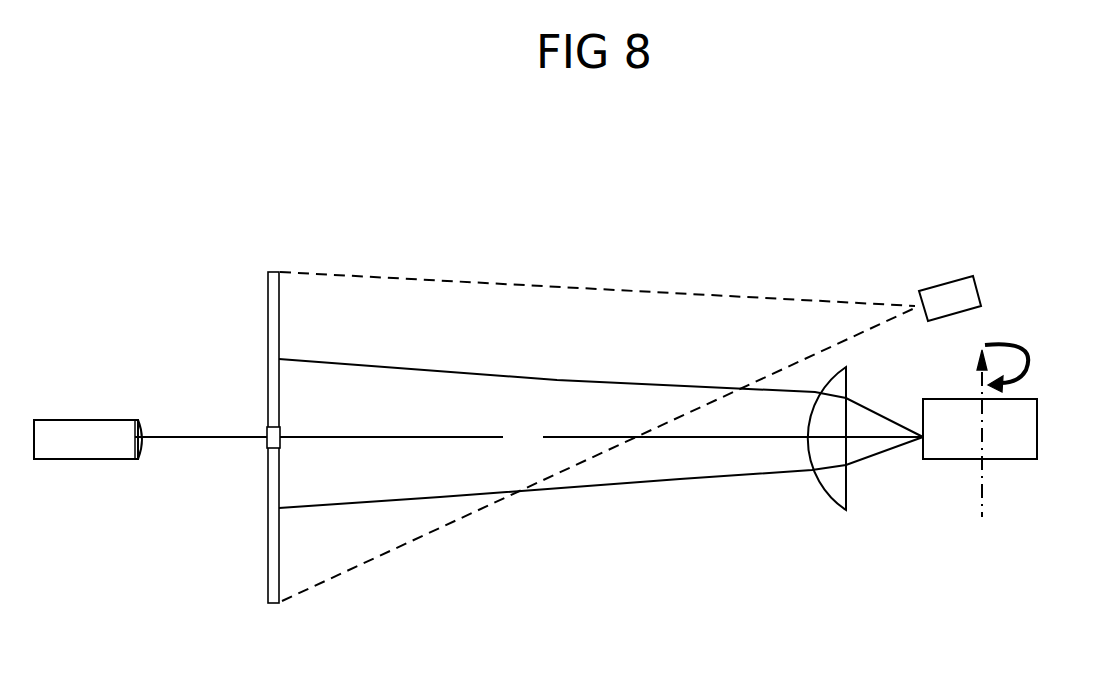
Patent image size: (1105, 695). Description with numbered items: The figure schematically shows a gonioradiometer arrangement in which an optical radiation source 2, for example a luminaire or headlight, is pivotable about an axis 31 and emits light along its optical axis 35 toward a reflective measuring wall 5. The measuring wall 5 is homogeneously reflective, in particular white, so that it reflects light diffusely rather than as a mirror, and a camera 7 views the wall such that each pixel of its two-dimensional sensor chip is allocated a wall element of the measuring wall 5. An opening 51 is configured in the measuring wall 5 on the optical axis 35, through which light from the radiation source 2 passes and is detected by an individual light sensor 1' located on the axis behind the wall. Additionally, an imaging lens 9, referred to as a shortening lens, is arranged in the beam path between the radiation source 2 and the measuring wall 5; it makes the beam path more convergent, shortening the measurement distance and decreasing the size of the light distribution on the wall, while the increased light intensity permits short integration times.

The sensor 1' is at (88, 399).
The optical axis 35 is at (378, 433).
The measuring wall 5 is at (281, 553).
The opening 51 is at (281, 448).
The imaging lens 9 is at (827, 503).
The camera 7 is at (946, 283).
The radiation source 2 is at (1025, 398).
The optical axis 31 is at (983, 500).